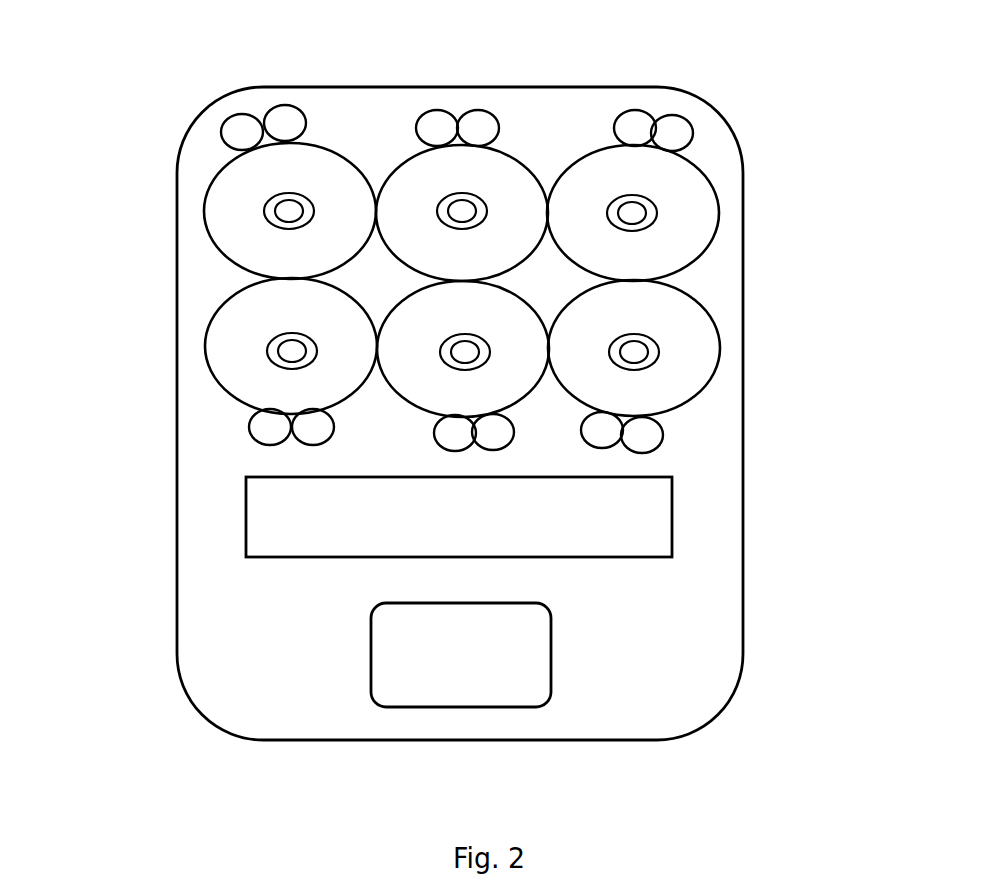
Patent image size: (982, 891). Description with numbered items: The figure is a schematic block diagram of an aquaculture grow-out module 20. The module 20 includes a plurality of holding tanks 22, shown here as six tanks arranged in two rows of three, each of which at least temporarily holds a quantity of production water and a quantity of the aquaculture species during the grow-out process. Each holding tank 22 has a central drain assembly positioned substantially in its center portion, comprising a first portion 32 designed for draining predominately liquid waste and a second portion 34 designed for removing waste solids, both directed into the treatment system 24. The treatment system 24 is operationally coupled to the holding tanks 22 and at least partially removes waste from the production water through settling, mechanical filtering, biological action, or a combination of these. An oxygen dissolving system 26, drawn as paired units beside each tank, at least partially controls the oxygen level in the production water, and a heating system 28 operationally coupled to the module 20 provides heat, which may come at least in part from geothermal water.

The aquaculture grow-out module 20 is at (122, 285).
The holding tank 22 is at (710, 177).
The treatment system 24 is at (673, 503).
The oxygen dissolving system 26 is at (635, 108).
The heating system 28 is at (553, 650).
The first portion of central drain assembly 32 is at (638, 325).
The second portion of central drain assembly 34 is at (650, 367).